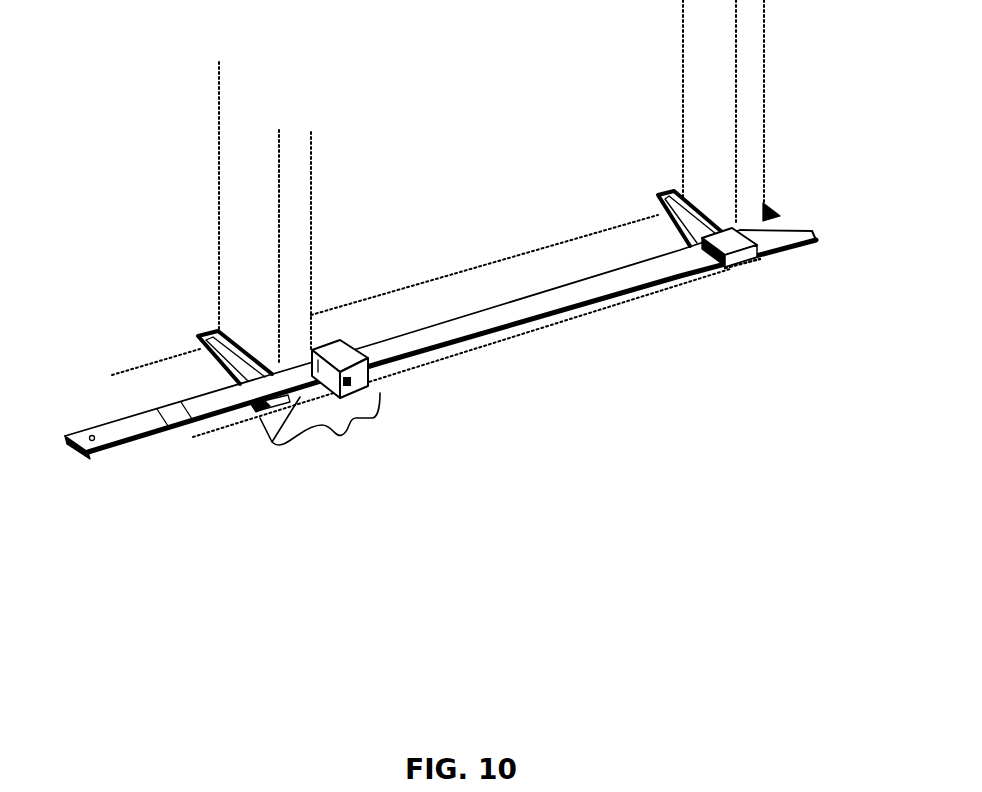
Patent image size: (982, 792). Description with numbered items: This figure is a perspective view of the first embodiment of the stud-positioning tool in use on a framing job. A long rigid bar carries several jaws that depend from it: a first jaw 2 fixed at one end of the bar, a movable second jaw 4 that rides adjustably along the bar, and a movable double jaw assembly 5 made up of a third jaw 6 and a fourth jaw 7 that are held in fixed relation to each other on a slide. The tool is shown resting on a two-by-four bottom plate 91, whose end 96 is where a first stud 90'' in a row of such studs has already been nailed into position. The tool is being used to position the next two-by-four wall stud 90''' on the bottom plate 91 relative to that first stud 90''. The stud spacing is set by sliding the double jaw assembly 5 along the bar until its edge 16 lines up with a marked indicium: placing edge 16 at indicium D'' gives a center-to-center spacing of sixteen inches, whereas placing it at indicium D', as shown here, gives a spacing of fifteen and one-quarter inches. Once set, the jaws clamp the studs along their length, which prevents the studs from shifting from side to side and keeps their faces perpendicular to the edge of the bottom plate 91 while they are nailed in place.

The first jaw 2 is at (771, 208).
The second jaw 4 is at (656, 195).
The double jaw assembly 5 is at (326, 422).
The third jaw 6 is at (309, 356).
The fourth jaw 7 is at (197, 350).
The edge of double clamp assembly 16 is at (292, 386).
The bottom plate 91 is at (515, 270).
The end of bottom plate 96 is at (760, 256).
The first stud 90'' is at (761, 112).
The wall stud 90''' is at (327, 213).
The indicium D' is at (328, 478).
The indicium D'' is at (250, 475).